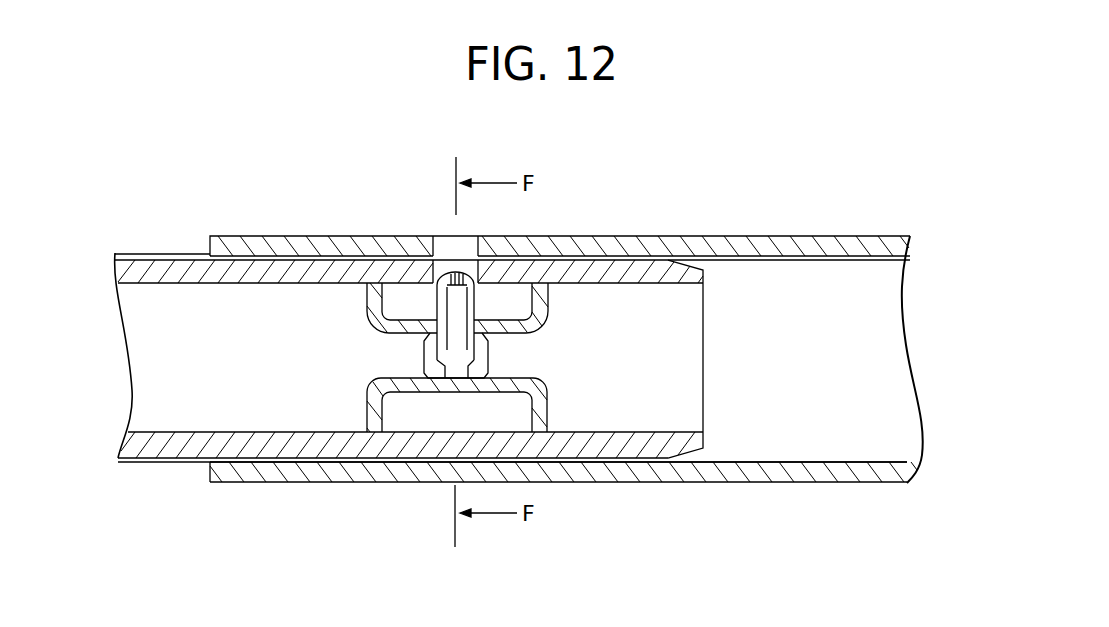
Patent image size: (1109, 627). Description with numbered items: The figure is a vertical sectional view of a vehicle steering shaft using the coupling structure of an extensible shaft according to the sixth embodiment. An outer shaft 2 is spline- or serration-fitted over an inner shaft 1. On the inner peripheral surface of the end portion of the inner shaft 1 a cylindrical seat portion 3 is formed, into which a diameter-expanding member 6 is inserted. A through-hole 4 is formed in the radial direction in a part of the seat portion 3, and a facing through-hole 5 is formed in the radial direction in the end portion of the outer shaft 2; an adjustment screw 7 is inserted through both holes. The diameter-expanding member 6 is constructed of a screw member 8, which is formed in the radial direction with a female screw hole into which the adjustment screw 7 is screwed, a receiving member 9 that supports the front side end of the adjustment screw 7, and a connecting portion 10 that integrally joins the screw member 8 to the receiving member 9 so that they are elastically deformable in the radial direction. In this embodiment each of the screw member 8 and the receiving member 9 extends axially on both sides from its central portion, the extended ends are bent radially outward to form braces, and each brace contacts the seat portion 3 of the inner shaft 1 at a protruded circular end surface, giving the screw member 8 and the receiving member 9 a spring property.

The inner shaft 1 is at (170, 460).
The outer shaft 2 is at (673, 483).
The seat portion 3 is at (684, 432).
The through-hole 4 is at (440, 266).
The through-hole 5 is at (455, 250).
The diameter-expanding member 6 is at (514, 360).
The adjustment screw 7 is at (457, 318).
The screw member 8 is at (527, 330).
The receiving member 9 is at (542, 407).
The connecting portion 10 is at (424, 360).